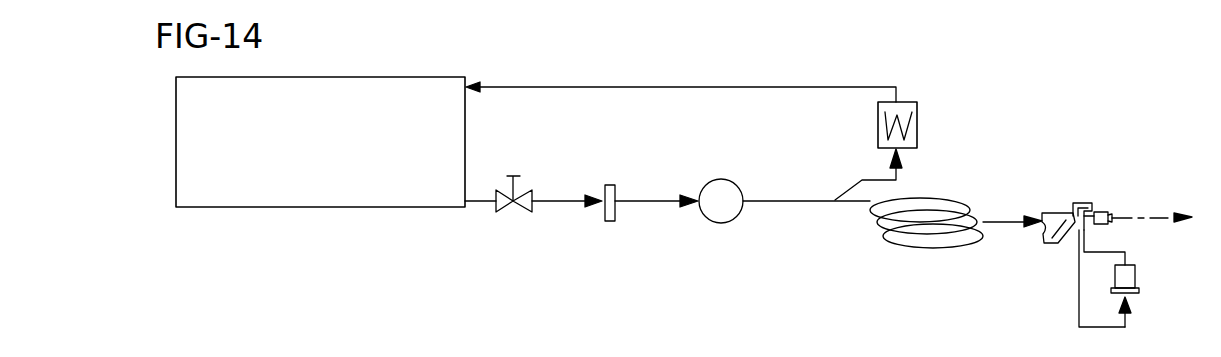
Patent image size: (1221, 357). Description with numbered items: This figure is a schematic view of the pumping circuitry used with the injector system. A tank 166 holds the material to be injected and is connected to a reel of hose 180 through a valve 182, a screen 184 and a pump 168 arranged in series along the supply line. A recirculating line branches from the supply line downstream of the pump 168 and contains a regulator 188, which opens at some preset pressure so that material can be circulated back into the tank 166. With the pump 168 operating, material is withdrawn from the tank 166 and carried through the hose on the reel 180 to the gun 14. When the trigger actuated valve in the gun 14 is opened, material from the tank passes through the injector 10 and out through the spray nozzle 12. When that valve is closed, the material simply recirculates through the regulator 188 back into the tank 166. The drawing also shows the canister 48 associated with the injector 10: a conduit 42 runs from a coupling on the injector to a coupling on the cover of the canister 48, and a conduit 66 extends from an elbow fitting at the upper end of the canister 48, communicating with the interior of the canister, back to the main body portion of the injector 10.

The tank 166 is at (390, 92).
The valve 182 is at (512, 212).
The screen 184 is at (608, 222).
The pump 168 is at (731, 216).
The regulator 188 is at (912, 108).
The reel of hose 180 is at (920, 250).
The gun 14 is at (1054, 213).
The injector 10 is at (1088, 203).
The spray nozzle 12 is at (1113, 212).
The conduit 66 is at (1133, 238).
The canister 48 is at (1139, 280).
The conduit 42 is at (1084, 328).